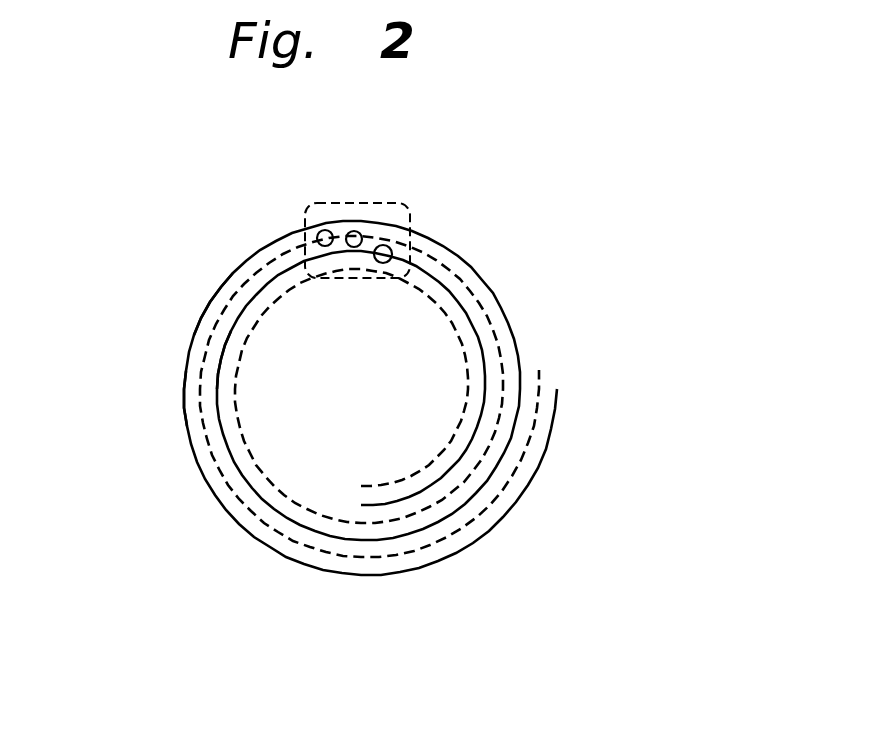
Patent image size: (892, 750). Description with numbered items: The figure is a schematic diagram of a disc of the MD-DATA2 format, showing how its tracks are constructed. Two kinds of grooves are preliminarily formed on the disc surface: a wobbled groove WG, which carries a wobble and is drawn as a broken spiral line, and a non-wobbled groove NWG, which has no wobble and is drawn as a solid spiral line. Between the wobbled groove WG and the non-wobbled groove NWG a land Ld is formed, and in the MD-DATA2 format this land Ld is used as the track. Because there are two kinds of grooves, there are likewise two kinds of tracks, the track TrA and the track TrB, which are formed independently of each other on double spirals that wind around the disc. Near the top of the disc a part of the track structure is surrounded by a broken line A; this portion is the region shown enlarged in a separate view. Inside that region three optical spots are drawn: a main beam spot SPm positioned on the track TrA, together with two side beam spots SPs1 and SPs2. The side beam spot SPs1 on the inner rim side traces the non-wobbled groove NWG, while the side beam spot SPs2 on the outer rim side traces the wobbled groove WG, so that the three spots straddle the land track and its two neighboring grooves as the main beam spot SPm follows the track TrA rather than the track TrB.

The side beam spot SPs2 is at (319, 233).
The main beam spot SPm is at (361, 234).
The side beam spot SPs1 is at (392, 254).
The broken line A is at (337, 201).
The track TrB is at (225, 281).
The track TrA is at (213, 325).
The land Ld is at (191, 407).
The non-wobbled groove NWG is at (483, 274).
The wobbled groove WG is at (495, 314).